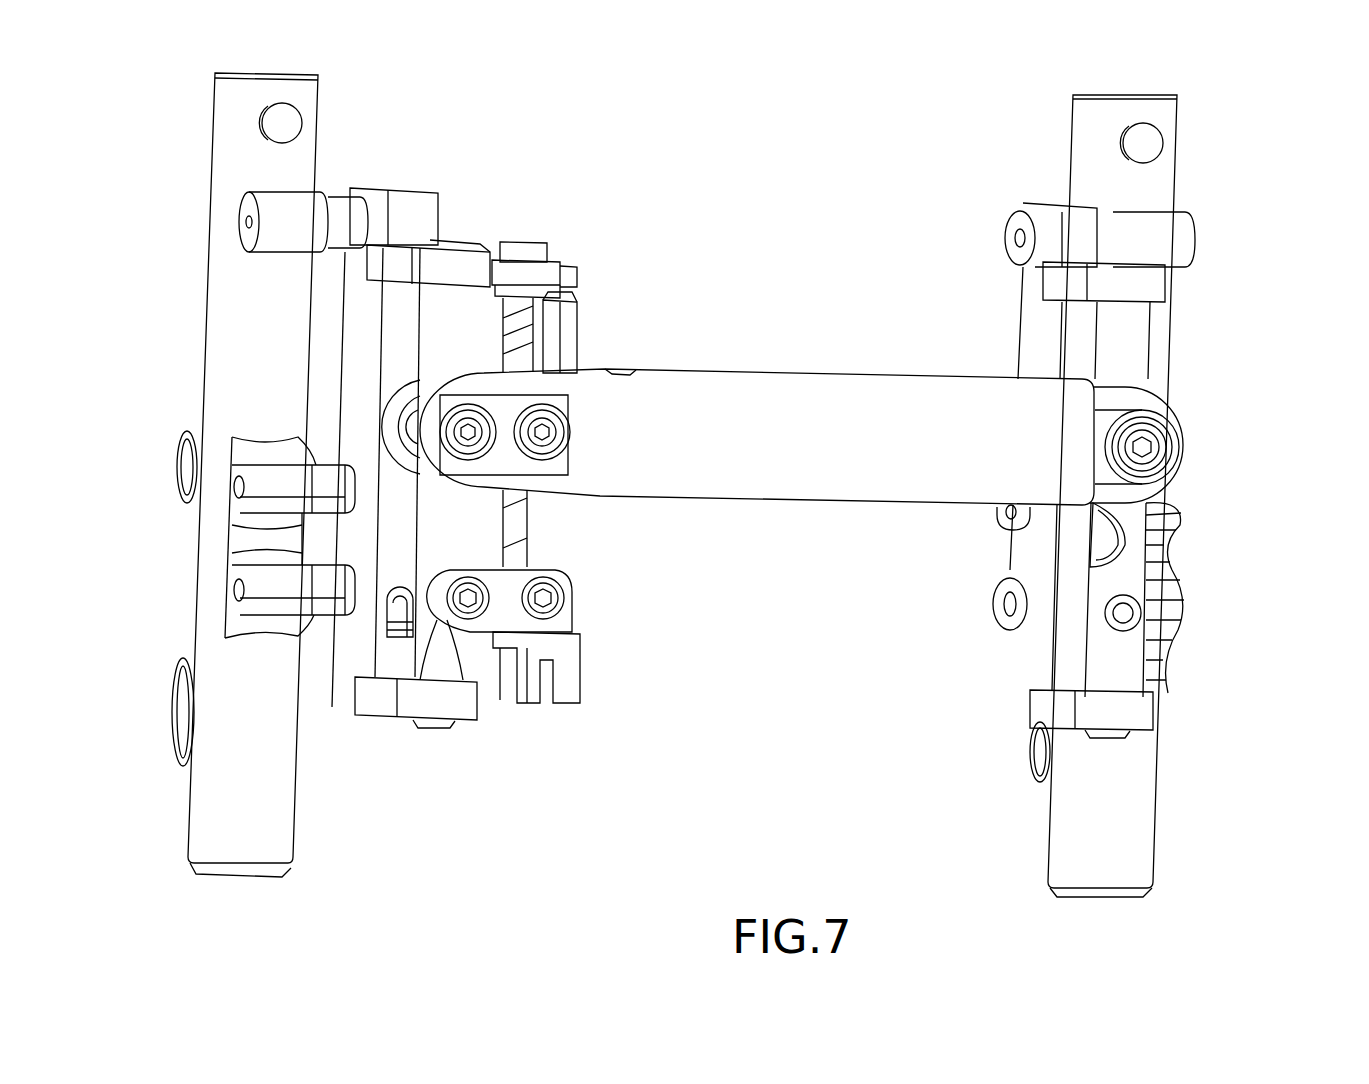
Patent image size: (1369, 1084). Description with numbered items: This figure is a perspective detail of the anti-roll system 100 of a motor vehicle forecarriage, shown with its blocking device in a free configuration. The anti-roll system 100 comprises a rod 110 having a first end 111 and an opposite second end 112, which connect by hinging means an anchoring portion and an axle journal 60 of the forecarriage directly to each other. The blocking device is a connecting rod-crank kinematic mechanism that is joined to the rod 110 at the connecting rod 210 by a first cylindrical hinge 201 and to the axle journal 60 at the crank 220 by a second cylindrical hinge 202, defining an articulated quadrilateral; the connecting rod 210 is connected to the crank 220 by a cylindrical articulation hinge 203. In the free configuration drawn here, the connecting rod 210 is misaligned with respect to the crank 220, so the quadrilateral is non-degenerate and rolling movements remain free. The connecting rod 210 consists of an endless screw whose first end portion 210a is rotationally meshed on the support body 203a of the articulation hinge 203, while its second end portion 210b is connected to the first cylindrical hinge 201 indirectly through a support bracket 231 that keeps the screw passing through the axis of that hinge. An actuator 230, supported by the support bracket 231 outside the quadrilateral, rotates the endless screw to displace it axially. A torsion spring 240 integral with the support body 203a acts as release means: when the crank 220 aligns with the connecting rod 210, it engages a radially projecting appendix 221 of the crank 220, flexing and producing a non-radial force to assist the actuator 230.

The axle journal 60 is at (225, 802).
The anti-roll system 100 is at (848, 676).
The rod 110 is at (923, 507).
The first end 111 is at (402, 477).
The second end 112 is at (1195, 428).
The first cylindrical hinge 201 is at (545, 432).
The second cylindrical hinge 202 is at (422, 720).
The cylindrical articulation hinge 203 is at (568, 605).
The support body 203a is at (545, 598).
The connecting rod 210 is at (685, 325).
The first end portion 210a is at (500, 567).
The second end portion 210b is at (540, 335).
The crank 220 is at (503, 613).
The appendix 221 is at (463, 720).
The actuator 230 is at (518, 242).
The support bracket 231 is at (568, 345).
The torsion spring 240 is at (567, 690).